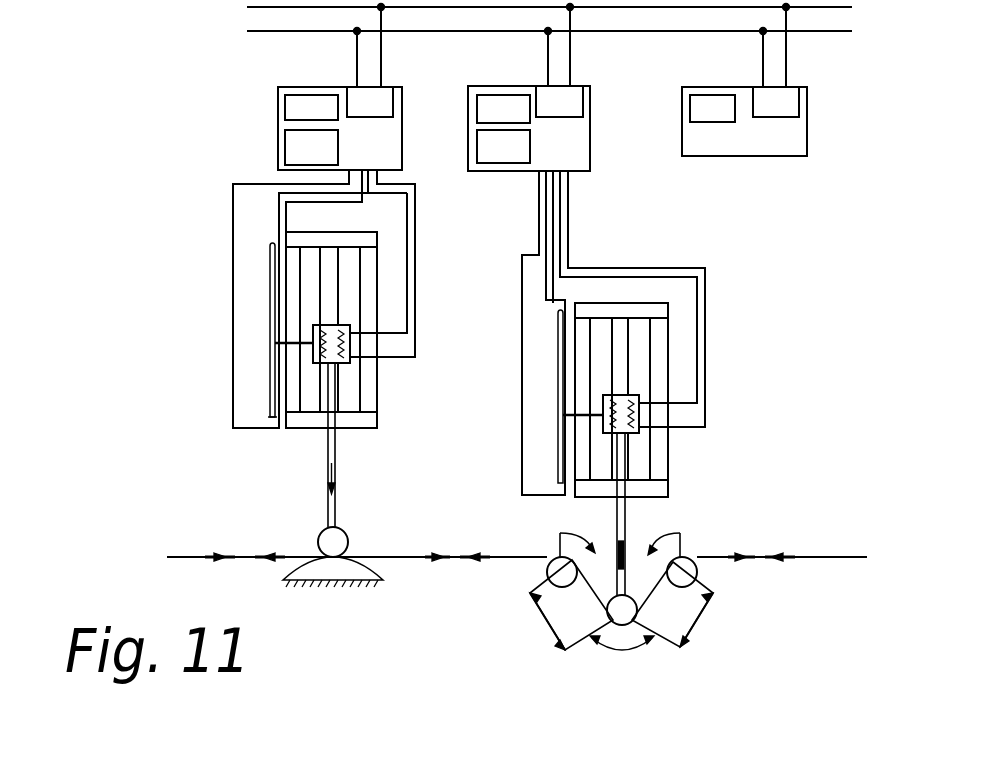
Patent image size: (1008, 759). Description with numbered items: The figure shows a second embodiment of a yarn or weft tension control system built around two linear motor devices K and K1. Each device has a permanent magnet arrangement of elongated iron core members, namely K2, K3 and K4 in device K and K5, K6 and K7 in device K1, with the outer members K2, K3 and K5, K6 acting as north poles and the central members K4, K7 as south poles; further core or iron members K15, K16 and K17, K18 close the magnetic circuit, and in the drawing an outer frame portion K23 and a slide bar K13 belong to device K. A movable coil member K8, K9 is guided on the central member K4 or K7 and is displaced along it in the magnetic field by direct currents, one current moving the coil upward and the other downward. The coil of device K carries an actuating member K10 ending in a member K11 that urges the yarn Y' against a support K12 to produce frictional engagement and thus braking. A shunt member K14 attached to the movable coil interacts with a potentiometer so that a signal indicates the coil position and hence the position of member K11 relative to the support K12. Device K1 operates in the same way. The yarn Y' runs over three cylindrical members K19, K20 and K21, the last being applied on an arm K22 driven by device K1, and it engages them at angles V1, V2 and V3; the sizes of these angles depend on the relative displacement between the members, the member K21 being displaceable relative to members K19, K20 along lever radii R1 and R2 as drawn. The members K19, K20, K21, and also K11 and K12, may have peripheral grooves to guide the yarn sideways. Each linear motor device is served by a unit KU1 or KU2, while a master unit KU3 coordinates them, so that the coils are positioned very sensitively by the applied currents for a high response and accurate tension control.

The unit KU1 is at (283, 125).
The unit KU2 is at (563, 145).
The master unit KU3 is at (788, 135).
The linear motor device K is at (285, 432).
The linear motor device K1 is at (673, 478).
The elongated iron core member K2 is at (372, 383).
The elongated iron core member K3 is at (290, 268).
The elongated iron core member K4 is at (333, 287).
The elongated iron core member K5 is at (660, 450).
The elongated iron core member K6 is at (585, 340).
The elongated iron core member K7 is at (623, 343).
The movable coil member K8 is at (345, 363).
The movable coil member K9 is at (640, 400).
The actuating member K10 is at (335, 508).
The member urging yarn K11 is at (303, 203).
The support K12 is at (347, 570).
The slide bar K13 is at (270, 315).
The shunt member K14 is at (283, 347).
The core or iron member K15 is at (360, 240).
The core or iron member K16 is at (303, 430).
The core or iron member K17 is at (632, 310).
The core or iron member K18 is at (643, 490).
The cylindrical member K19 is at (548, 572).
The cylindrical member K20 is at (698, 572).
The cylindrical member K21 is at (634, 608).
The arm K22 is at (409, 278).
The outer frame side K23 is at (416, 338).
The first lever radius R1 is at (571, 605).
The second lever radius R2 is at (691, 604).
The angle V1 is at (557, 539).
The angle V2 is at (622, 661).
The angle V3 is at (682, 539).
The yarn Y' is at (517, 536).